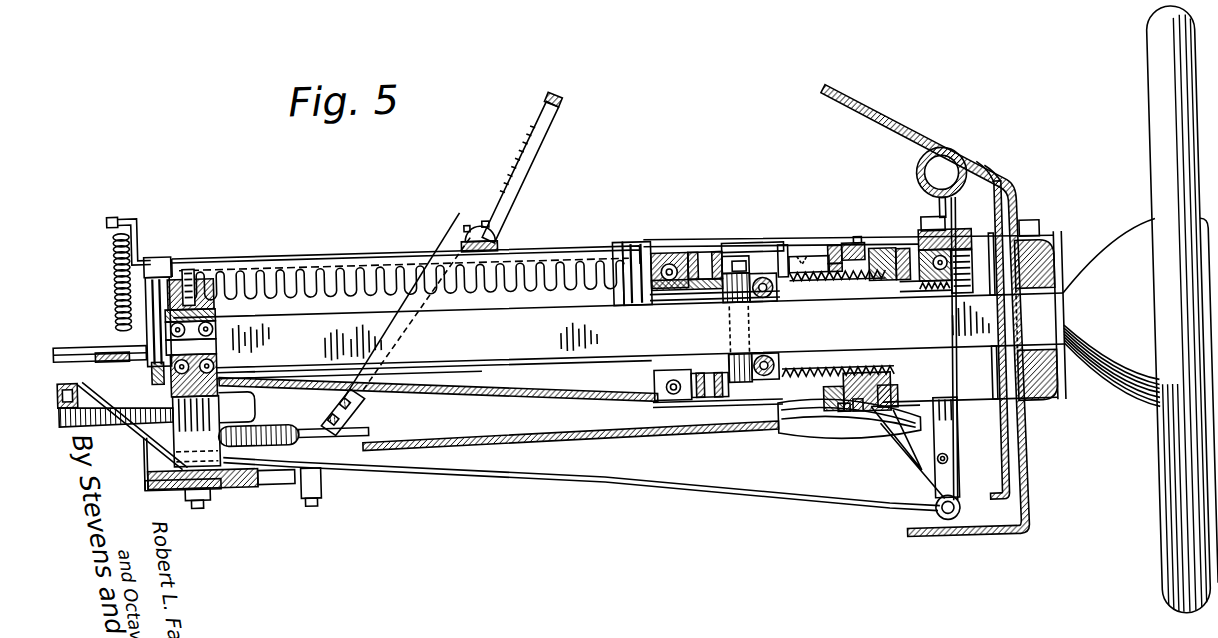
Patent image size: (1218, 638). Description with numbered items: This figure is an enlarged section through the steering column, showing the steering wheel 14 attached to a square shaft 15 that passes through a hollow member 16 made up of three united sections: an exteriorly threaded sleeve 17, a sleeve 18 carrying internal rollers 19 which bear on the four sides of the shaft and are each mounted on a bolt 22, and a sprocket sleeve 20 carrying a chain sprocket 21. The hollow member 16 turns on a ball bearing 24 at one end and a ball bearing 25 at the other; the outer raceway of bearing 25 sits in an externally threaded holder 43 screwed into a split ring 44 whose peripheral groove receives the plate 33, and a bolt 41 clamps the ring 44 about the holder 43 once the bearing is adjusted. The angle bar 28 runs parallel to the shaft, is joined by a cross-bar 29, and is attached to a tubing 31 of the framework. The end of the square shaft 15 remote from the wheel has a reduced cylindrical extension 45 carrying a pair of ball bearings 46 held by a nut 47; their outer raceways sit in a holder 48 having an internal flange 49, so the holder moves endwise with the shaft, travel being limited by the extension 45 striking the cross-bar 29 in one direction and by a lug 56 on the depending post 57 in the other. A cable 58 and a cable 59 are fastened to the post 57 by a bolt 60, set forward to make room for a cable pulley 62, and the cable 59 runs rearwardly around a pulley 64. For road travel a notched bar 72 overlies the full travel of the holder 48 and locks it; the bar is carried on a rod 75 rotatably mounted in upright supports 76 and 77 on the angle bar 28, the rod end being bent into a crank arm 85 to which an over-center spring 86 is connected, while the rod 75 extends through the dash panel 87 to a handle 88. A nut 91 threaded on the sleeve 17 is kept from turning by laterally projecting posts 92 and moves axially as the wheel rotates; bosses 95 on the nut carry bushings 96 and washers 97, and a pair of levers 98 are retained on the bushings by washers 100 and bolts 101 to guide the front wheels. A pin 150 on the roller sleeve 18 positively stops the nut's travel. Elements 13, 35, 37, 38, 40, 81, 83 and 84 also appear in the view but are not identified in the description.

The pinion shaft 13 is at (204, 282).
The steering wheel 14 is at (1158, 100).
The square shaft 15 is at (588, 312).
The hollow member 16 is at (806, 258).
The exteriorly threaded sleeve 17 is at (836, 290).
The sleeve 18 is at (747, 247).
The rollers 19 is at (770, 301).
The sprocket sleeve 20 is at (700, 295).
The chain sprocket 21 is at (701, 255).
The bolt 22 is at (750, 272).
The ball bearing 24 is at (672, 255).
The ball bearing 25 is at (928, 276).
The angle bar 28 is at (78, 333).
The cross-bar 29 is at (96, 347).
The tubing 31 is at (58, 400).
The plate 33 is at (958, 218).
The block 35 is at (923, 232).
The stem 37 is at (942, 214).
The ring 38 is at (920, 182).
The bar 40 is at (946, 458).
The bolt 41 is at (944, 469).
The holder 43 is at (1035, 319).
The ring 44 is at (966, 240).
The reduced cylindrical extension 45 is at (215, 348).
The ball bearings 46 is at (171, 313).
The nut 47 is at (150, 358).
The holder 48 is at (215, 302).
The internal flange 49 is at (978, 277).
The lug 56 is at (250, 396).
The depending post 57 is at (202, 437).
The cable 58 is at (280, 476).
The cable 59 is at (470, 393).
The bolt 60 is at (312, 492).
The cable pulley 62 is at (236, 478).
The pulley 64 is at (775, 422).
The notched bar 72 is at (280, 258).
The rod 75 is at (150, 246).
The upright support 76 is at (160, 246).
The upright support 77 is at (618, 243).
The handle 81 is at (494, 226).
The plate 83 is at (499, 244).
The pivot dome 84 is at (466, 240).
The crank arm 85 is at (137, 206).
The spring 86 is at (114, 258).
The dash panel 87 is at (1024, 214).
The handle 88 is at (1041, 240).
The nut 91 is at (860, 290).
The laterally projecting posts 92 is at (812, 264).
The bosses 95 is at (884, 256).
The bushings 96 is at (884, 374).
The washers 97 is at (898, 384).
The levers 98 is at (835, 252).
The washers 100 is at (852, 250).
The bolts 101 is at (860, 244).
The pin 150 is at (788, 242).